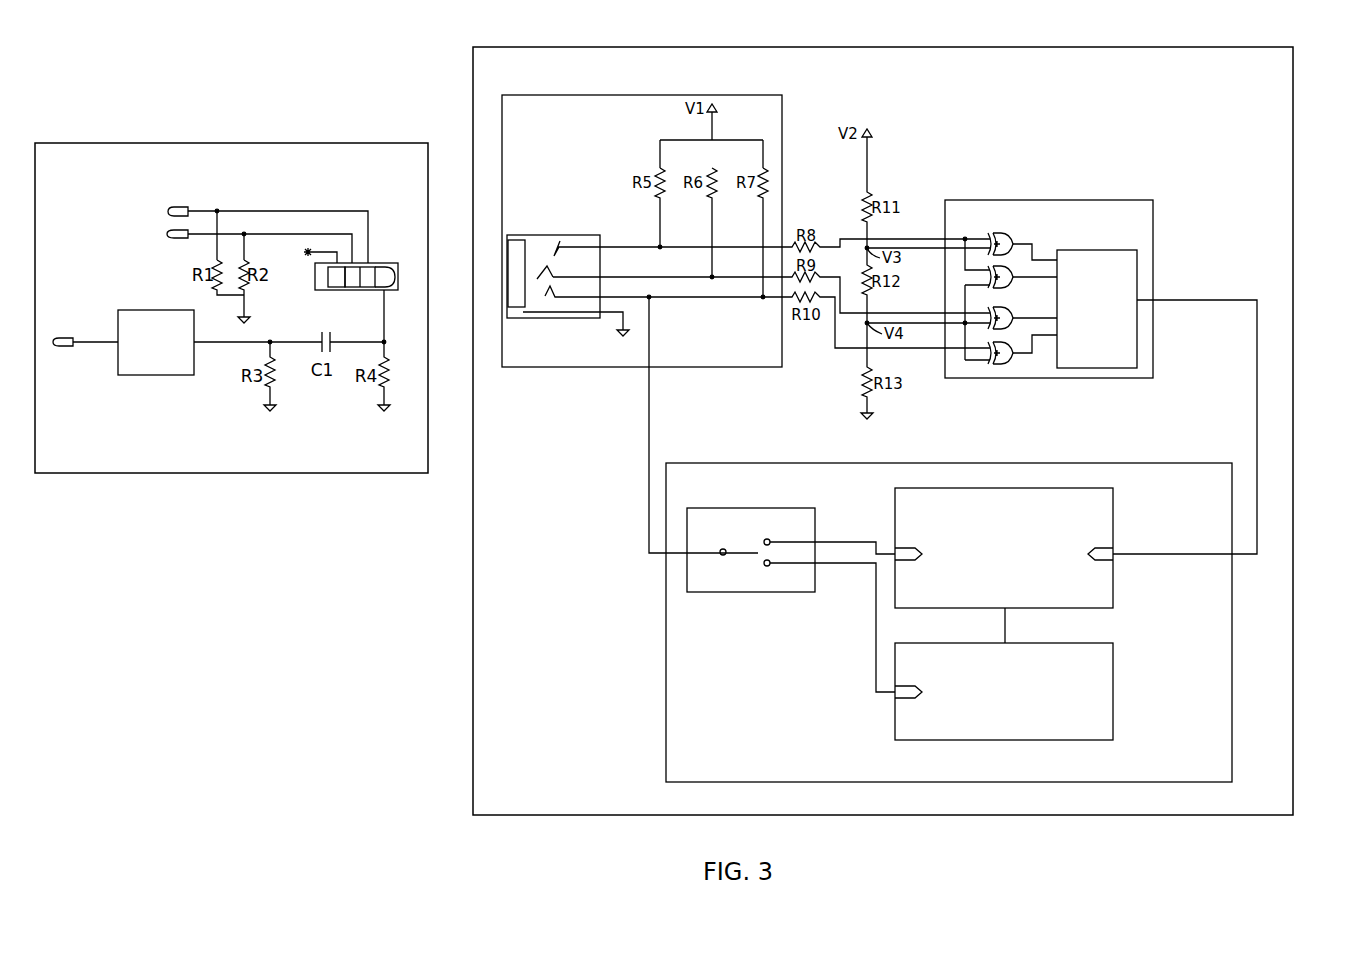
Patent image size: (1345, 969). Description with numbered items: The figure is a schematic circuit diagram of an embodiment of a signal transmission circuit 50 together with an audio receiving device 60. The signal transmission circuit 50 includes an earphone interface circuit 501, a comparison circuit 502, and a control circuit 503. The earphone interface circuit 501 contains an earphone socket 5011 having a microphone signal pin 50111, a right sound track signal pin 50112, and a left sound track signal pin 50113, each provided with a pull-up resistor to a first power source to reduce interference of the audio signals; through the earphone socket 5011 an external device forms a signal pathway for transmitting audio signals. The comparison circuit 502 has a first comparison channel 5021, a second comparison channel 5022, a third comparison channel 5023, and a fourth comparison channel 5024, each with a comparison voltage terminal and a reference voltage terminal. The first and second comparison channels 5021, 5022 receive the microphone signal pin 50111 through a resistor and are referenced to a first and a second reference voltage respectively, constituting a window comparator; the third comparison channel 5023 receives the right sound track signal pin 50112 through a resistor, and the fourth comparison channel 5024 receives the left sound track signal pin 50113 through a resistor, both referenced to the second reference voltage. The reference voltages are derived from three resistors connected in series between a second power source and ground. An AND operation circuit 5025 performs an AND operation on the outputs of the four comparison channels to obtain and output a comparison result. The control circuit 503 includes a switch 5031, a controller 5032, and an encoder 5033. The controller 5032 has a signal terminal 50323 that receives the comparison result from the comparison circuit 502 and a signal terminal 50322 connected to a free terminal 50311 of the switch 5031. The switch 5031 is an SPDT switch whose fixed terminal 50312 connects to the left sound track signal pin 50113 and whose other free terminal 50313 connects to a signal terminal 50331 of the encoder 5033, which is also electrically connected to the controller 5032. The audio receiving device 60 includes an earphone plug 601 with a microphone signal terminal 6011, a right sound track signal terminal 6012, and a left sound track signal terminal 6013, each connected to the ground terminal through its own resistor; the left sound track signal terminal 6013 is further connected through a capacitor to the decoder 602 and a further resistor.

The signal transmission circuit 50 is at (1285, 47).
The earphone interface circuit 501 is at (633, 95).
The earphone socket 5011 is at (571, 272).
The microphone signal pin 50111 is at (562, 243).
The right sound track signal pin 50112 is at (538, 276).
The left sound track signal pin 50113 is at (553, 290).
The comparison circuit 502 is at (1056, 274).
The first comparison channel 5021 is at (993, 233).
The second comparison channel 5022 is at (1003, 264).
The third comparison channel 5023 is at (995, 307).
The fourth comparison channel 5024 is at (995, 363).
The AND operation circuit 5025 is at (1082, 250).
The control circuit 503 is at (1172, 463).
The switch 5031 is at (791, 583).
The free terminal 50311 is at (770, 540).
The fixed terminal 50312 is at (724, 556).
The free terminal 50313 is at (767, 566).
The controller 5032 is at (1042, 541).
The signal terminal 50322 is at (917, 548).
The signal terminal 50323 is at (1100, 548).
The encoder 5033 is at (1046, 671).
The signal terminal 50331 is at (917, 686).
The audio receiving device 60 is at (265, 143).
The earphone plug 601 is at (352, 281).
The microphone signal terminal 6011 is at (345, 288).
The right sound track signal terminal 6012 is at (368, 288).
The left sound track signal terminal 6013 is at (385, 288).
The decoder 602 is at (153, 310).